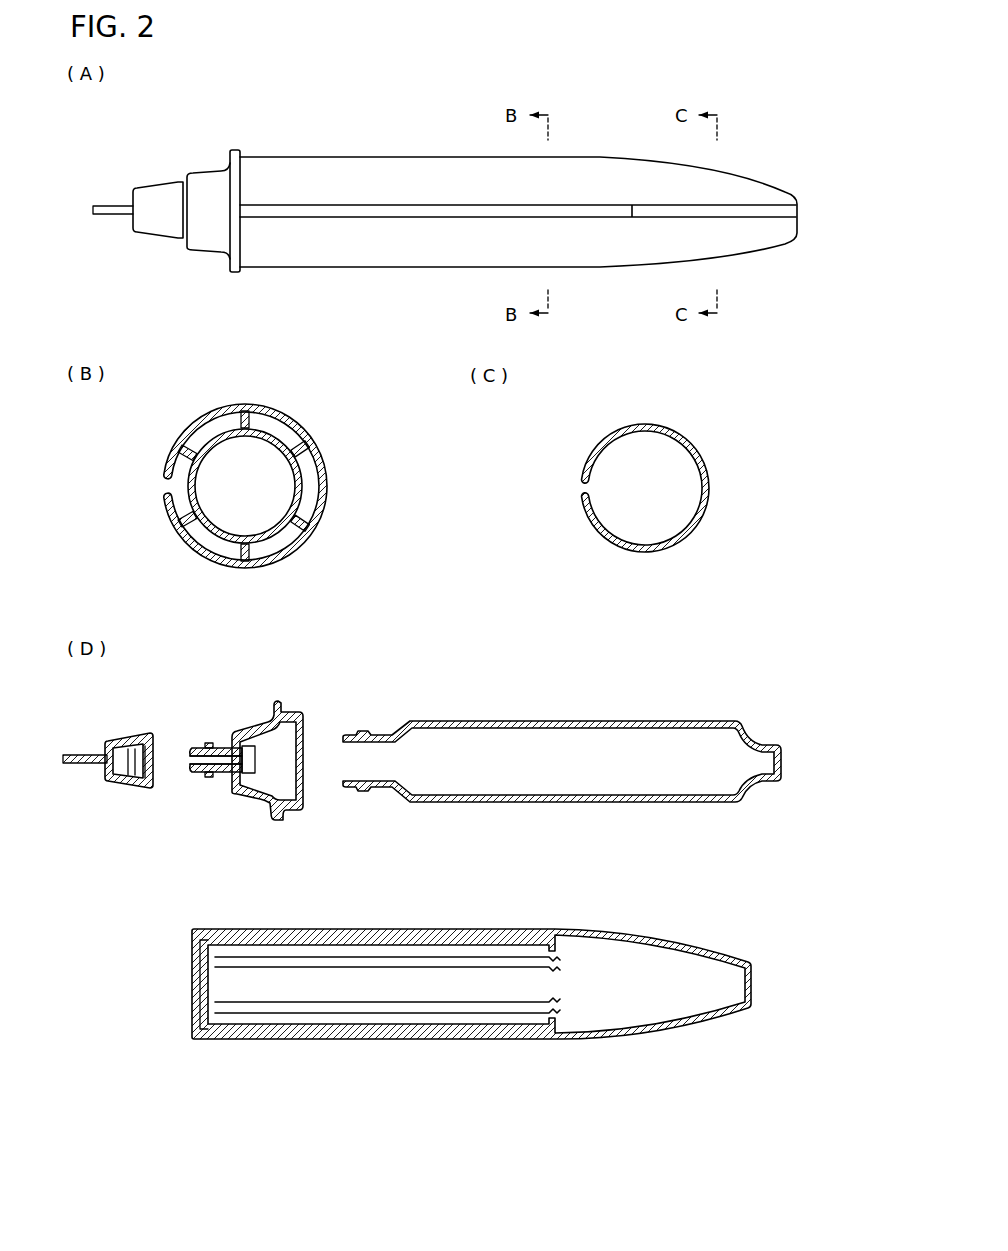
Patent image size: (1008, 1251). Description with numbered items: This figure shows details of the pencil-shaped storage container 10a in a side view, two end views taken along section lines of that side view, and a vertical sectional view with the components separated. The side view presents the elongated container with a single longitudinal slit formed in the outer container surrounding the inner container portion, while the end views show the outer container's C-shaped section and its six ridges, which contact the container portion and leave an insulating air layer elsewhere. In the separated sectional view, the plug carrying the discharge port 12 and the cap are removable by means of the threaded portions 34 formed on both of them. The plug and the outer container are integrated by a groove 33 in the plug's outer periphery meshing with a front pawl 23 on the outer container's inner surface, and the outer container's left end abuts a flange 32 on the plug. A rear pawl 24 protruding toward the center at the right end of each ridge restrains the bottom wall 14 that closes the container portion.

The storage container 10a is at (191, 301).
The discharge port 12 is at (192, 759).
The bottom wall 14 is at (784, 760).
The front pawl 23 is at (194, 1022).
The rear pawl 24 is at (552, 1021).
The flange 32 is at (289, 813).
The groove 33 is at (291, 712).
The threaded portion 34 is at (213, 776).